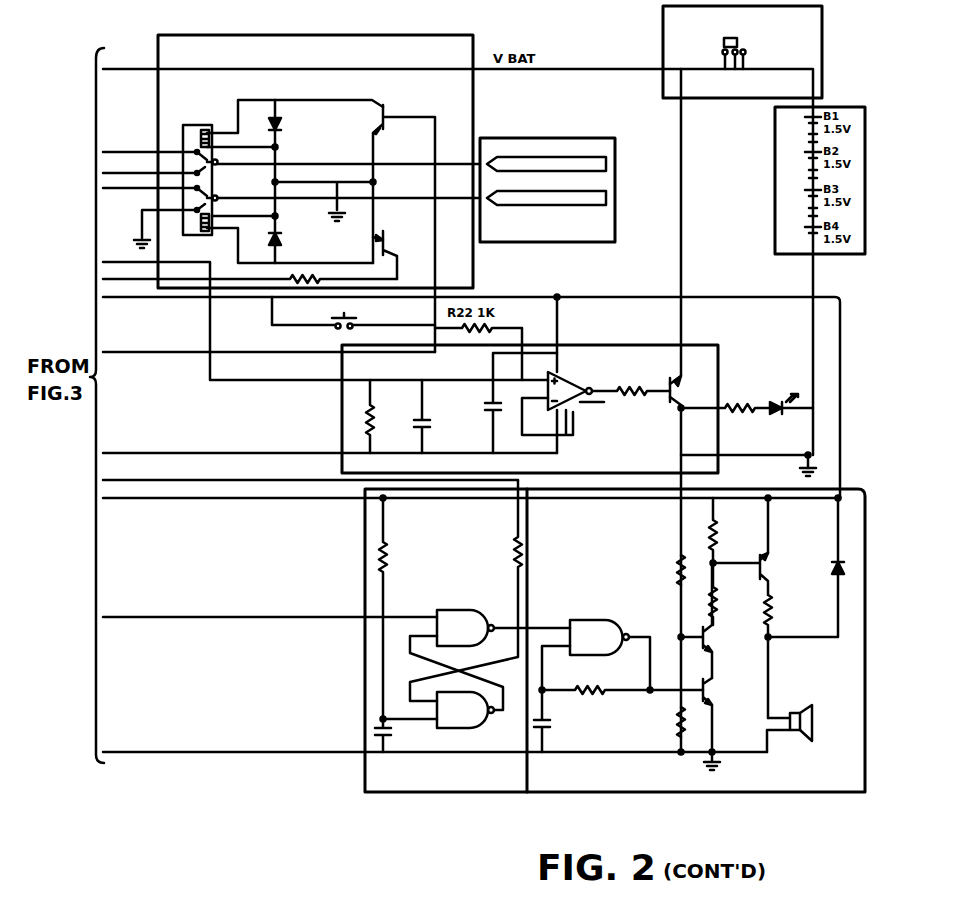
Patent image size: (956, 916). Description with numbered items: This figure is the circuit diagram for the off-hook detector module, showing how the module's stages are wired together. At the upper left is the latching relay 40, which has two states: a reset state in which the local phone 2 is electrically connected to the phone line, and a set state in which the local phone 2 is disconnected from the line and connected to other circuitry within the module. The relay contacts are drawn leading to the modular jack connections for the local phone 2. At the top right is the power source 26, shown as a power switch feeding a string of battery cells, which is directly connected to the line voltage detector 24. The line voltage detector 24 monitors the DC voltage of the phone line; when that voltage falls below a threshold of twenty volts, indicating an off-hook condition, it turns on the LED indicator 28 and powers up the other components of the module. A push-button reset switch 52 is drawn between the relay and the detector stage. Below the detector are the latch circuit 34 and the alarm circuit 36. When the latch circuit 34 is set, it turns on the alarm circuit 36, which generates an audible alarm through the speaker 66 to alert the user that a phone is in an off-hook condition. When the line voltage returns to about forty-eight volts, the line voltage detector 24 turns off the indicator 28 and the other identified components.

The latching relay 40 is at (436, 35).
The power source 26 is at (663, 38).
The local phone 2 is at (557, 138).
The push-button reset switch 52 is at (353, 313).
The line voltage detector 24 is at (718, 355).
The LED indicator 28 is at (767, 401).
The latch circuit 34 is at (488, 792).
The alarm circuit 36 is at (778, 792).
The speaker 66 is at (815, 728).